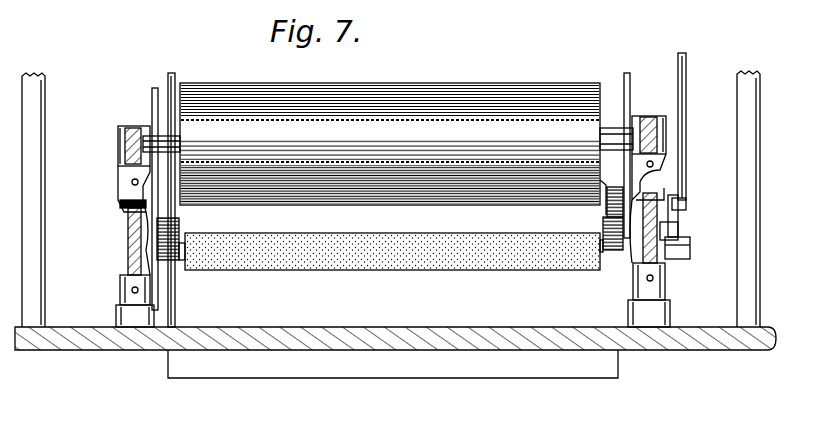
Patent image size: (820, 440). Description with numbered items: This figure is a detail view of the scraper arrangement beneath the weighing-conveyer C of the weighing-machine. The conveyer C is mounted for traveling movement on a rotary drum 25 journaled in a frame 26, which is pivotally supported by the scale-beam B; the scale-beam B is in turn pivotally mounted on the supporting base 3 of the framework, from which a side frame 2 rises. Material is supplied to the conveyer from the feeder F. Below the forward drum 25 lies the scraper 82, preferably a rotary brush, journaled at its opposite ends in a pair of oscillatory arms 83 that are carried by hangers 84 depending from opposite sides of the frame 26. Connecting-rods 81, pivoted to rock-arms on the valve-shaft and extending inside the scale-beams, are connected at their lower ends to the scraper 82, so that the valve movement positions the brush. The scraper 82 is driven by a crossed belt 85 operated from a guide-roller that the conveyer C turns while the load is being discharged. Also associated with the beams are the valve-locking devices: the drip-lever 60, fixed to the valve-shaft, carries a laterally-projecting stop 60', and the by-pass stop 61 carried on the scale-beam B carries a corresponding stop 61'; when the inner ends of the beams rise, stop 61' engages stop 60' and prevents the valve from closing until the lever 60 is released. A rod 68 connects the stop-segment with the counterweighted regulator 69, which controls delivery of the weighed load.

The feeder F is at (26, 130).
The side frame 2 is at (752, 127).
The supporting base 3 is at (382, 327).
The rotary carrier or drum 25 is at (410, 131).
The frame 26 is at (125, 138).
The drip-lever 60 is at (696, 121).
The laterally-projecting stop 60' is at (698, 196).
The by-pass stop 61 is at (691, 240).
The laterally-projecting stop 61' is at (696, 216).
The rod 68 is at (172, 76).
The regulator 69 is at (330, 378).
The connecting-rod 81 is at (152, 92).
The scraper 82 is at (345, 233).
The oscillatory arm 83 is at (178, 236).
The hanger 84 is at (126, 208).
The crossed belt 85 is at (606, 212).
The scale-beam B is at (128, 248).
The weighing-conveyer C is at (390, 83).